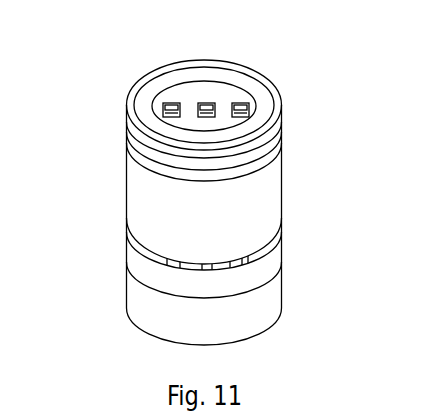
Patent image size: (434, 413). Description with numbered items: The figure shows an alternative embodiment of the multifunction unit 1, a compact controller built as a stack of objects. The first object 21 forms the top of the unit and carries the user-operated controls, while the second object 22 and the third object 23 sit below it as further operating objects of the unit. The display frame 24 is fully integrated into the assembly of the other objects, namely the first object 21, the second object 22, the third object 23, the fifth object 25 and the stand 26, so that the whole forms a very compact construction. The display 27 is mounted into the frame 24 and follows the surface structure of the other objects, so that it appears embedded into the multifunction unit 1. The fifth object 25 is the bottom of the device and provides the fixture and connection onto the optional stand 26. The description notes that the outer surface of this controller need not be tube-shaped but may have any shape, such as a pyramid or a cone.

The multifunction unit 1 is at (282, 107).
The first object 21 is at (126, 113).
The second object 22 is at (127, 170).
The third object 23 is at (128, 236).
The display frame 24 is at (282, 182).
The fifth object 25 is at (128, 254).
The stand 26 is at (128, 292).
The display 27 is at (267, 208).